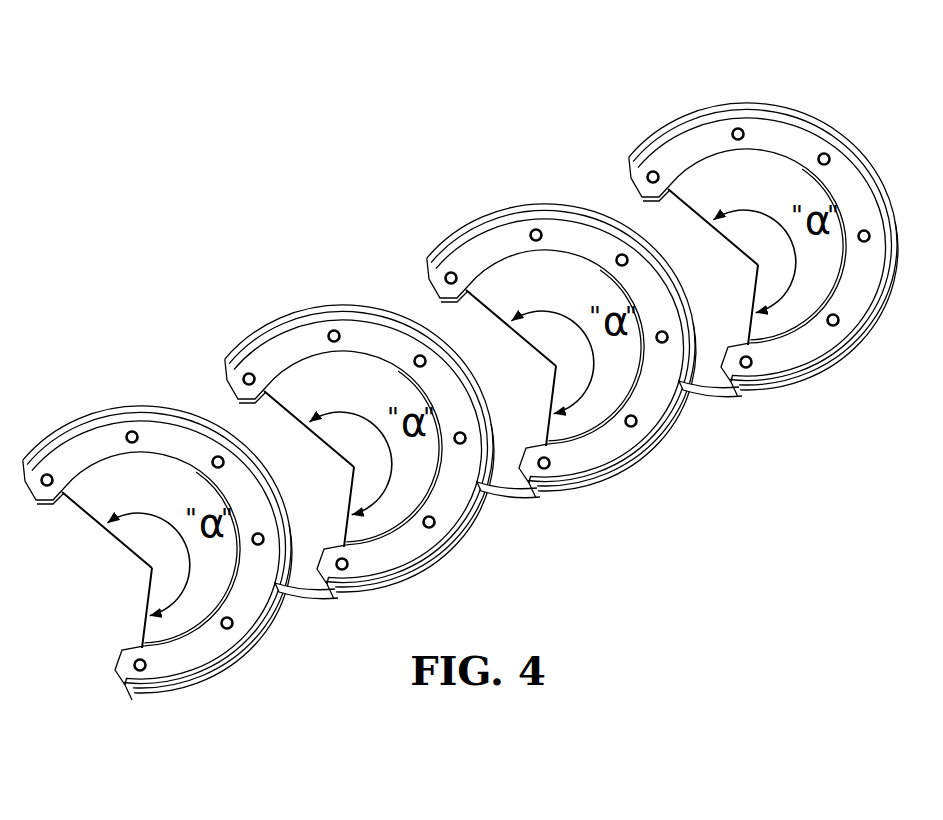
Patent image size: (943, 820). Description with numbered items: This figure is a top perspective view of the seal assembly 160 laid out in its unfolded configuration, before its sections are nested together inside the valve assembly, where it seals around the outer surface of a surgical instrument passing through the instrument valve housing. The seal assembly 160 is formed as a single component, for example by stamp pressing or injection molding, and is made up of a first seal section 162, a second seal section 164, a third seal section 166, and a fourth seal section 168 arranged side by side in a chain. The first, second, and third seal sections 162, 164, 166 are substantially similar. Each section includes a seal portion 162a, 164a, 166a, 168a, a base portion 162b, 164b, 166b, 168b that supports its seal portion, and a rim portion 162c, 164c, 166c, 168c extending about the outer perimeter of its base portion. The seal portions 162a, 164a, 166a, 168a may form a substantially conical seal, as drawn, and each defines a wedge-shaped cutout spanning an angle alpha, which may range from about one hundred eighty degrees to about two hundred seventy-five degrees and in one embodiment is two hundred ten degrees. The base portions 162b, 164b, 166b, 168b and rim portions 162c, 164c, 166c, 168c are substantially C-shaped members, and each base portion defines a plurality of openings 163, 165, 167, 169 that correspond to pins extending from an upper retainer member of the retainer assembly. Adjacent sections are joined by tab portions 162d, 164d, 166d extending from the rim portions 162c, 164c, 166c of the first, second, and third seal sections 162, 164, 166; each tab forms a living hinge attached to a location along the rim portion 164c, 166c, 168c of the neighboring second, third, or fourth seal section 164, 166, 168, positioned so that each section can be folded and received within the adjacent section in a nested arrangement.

The seal assembly 160 is at (243, 206).
The first seal section 162 is at (778, 257).
The seal portion 162a is at (797, 345).
The base portion 162b is at (862, 300).
The rim portion 162c is at (664, 133).
The tab portion 162d is at (681, 397).
The openings 163 is at (823, 150).
The second seal section 164 is at (586, 357).
The seal portion 164a is at (506, 258).
The base portion 164b is at (598, 450).
The rim portion 164c is at (560, 202).
The tab portion 164d is at (483, 487).
The openings 165 is at (665, 342).
The third seal section 166 is at (374, 436).
The seal portion 166a is at (354, 377).
The base portion 166b is at (443, 510).
The rim portion 166c is at (264, 334).
The tab portion 166d is at (280, 589).
The openings 167 is at (463, 435).
The fourth seal section 168 is at (157, 532).
The seal portion 168a is at (188, 618).
The base portion 168b is at (177, 662).
The rim portion 168c is at (167, 404).
The openings 169 is at (213, 464).